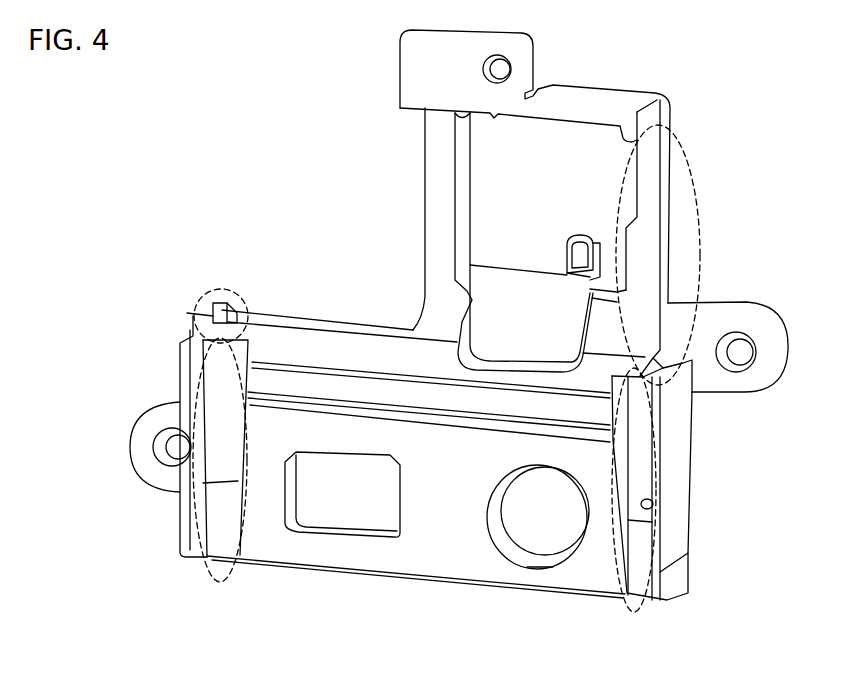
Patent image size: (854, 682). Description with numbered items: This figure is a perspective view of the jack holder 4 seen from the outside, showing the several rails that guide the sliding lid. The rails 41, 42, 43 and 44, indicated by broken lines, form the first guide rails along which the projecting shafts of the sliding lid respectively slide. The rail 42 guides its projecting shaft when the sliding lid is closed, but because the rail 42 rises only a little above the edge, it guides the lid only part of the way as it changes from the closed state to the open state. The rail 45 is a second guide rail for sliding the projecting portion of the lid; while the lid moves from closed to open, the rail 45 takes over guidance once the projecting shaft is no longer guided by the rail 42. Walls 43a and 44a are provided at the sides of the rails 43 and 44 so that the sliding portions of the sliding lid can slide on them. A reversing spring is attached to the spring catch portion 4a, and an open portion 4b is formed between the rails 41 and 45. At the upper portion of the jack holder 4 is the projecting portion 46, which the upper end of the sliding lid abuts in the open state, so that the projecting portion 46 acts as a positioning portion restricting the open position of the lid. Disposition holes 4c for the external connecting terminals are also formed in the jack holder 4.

The jack holder 4 is at (357, 125).
The spring catch portion 4a is at (590, 253).
The open portion 4b is at (473, 220).
The disposition holes 4c is at (587, 530).
The rail 41 is at (647, 267).
The rail 42 is at (222, 292).
The rail 43 is at (643, 463).
The wall 43a is at (647, 503).
The rail 44 is at (220, 395).
The wall 44a is at (202, 445).
The rail 45 is at (437, 242).
The projecting portion 46 is at (493, 117).